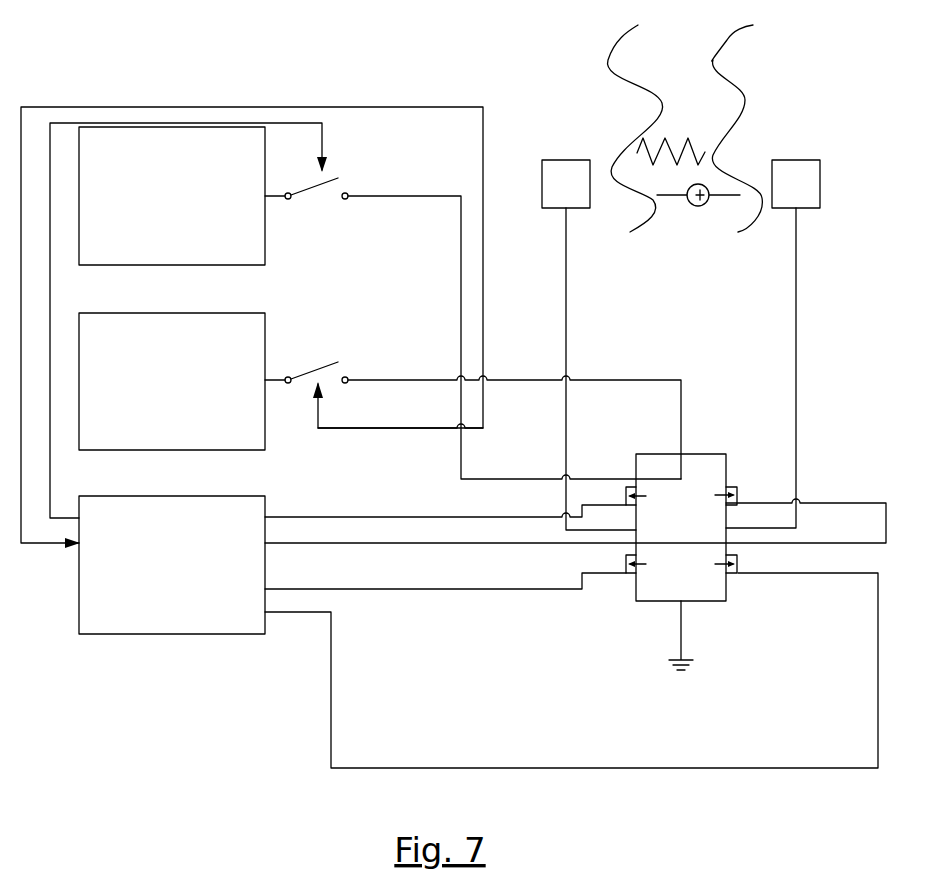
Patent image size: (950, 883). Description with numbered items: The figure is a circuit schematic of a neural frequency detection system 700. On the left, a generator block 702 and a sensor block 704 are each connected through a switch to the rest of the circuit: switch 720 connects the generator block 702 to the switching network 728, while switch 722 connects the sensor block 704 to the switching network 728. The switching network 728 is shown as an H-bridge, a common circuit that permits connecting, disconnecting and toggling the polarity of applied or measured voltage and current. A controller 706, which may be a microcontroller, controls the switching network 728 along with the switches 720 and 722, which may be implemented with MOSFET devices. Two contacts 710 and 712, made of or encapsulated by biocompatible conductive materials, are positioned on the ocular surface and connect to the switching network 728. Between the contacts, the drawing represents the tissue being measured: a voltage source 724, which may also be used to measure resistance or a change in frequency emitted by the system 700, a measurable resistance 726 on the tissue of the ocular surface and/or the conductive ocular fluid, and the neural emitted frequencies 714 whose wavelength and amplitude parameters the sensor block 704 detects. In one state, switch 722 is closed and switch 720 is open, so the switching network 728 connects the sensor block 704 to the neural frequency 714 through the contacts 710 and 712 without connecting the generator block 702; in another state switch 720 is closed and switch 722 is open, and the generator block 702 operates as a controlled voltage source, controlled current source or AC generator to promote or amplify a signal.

The neural frequency detection system 700 is at (252, 327).
The generator block 702 is at (172, 196).
The sensor block 704 is at (172, 381).
The controller 706 is at (482, 632).
The contact 710 is at (589, 345).
The contact 712 is at (773, 344).
The neural emitted frequencies 714 is at (685, 128).
The switch 720 is at (365, 320).
The switch 722 is at (473, 410).
The voltage source 724 is at (712, 209).
The measurable resistance 726 is at (694, 135).
The switching network 728 is at (681, 562).